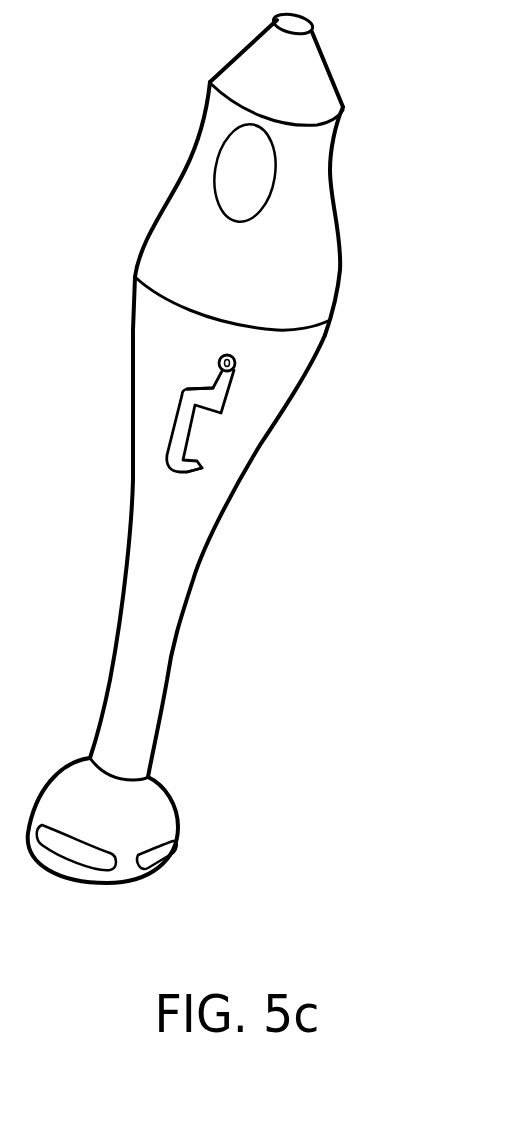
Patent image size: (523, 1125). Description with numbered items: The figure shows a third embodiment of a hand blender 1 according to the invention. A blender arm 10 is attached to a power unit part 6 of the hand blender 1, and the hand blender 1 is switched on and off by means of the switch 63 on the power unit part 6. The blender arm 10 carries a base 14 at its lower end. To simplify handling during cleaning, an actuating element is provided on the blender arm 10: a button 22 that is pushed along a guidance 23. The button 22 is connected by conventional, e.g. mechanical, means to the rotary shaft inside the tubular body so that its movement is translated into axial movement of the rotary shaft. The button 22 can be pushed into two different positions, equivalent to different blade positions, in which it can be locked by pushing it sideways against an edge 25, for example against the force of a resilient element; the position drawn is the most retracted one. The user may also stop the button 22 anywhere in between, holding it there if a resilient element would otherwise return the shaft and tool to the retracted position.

The hand blender 1 is at (222, 447).
The power unit part 6 is at (263, 173).
The blender arm 10 is at (130, 500).
The base / foot 14 is at (178, 813).
The button 22 is at (235, 364).
The guidance 23 is at (213, 407).
The edge 25 is at (190, 388).
The switch 63 is at (237, 222).